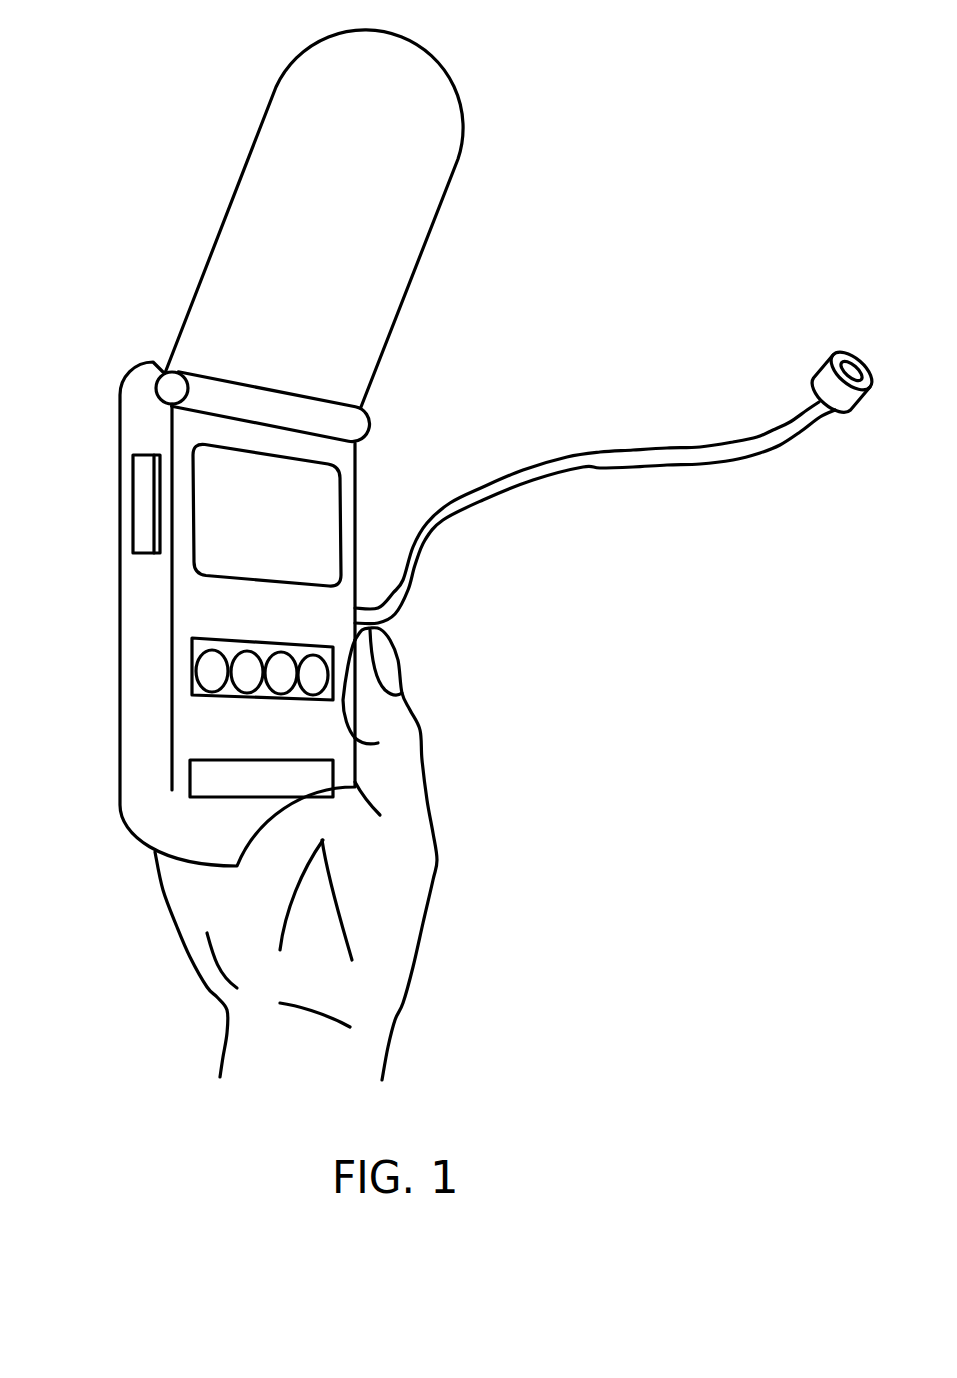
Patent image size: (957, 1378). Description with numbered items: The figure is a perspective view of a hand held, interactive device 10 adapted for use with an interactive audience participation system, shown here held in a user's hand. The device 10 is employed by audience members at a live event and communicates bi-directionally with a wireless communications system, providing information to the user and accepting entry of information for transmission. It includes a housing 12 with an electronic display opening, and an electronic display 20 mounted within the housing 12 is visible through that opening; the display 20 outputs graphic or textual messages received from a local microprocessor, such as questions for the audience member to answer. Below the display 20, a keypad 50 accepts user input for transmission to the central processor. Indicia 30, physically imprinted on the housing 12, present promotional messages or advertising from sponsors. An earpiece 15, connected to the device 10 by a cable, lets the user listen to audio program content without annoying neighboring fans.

The hand held interactive device 10 is at (242, 449).
The housing 12 is at (130, 684).
The earpiece 15 is at (587, 473).
The electronic display 20 is at (341, 480).
The indicia 30 is at (190, 784).
The keypad 50 is at (193, 668).